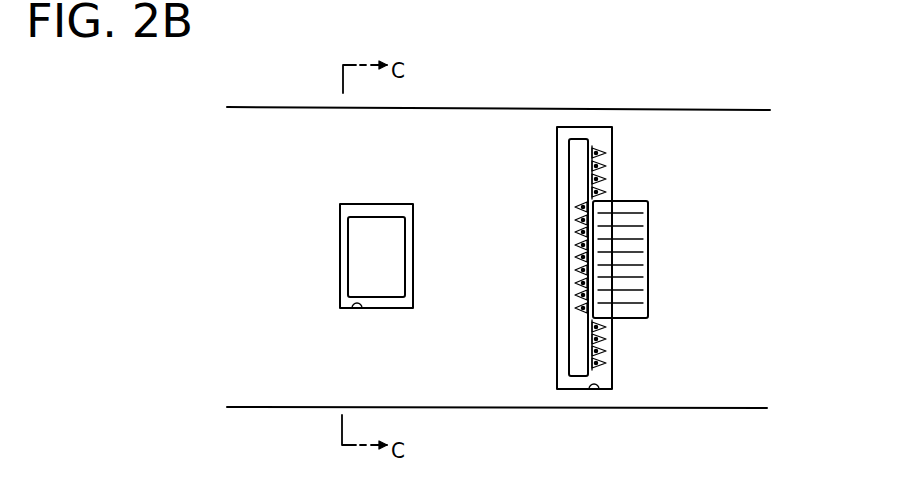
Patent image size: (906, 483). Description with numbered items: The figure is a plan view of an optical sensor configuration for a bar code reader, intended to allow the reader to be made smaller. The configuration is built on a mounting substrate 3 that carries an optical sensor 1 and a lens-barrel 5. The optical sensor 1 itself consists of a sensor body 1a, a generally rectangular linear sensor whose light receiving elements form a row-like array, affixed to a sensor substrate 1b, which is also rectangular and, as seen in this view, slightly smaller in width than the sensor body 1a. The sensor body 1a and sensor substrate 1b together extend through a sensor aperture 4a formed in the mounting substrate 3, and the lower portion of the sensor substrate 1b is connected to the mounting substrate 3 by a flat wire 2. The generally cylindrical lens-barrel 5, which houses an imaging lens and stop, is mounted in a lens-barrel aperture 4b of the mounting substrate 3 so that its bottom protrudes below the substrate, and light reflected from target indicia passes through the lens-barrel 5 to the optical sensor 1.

The optical sensor 1 is at (586, 188).
The sensor body 1a is at (575, 148).
The sensor substrate 1b is at (591, 150).
The flat wire 2 is at (626, 208).
The mounting substrate 3 is at (688, 120).
The sensor aperture 4a is at (594, 389).
The lens-barrel aperture 4b is at (357, 308).
The lens-barrel 5 is at (366, 250).